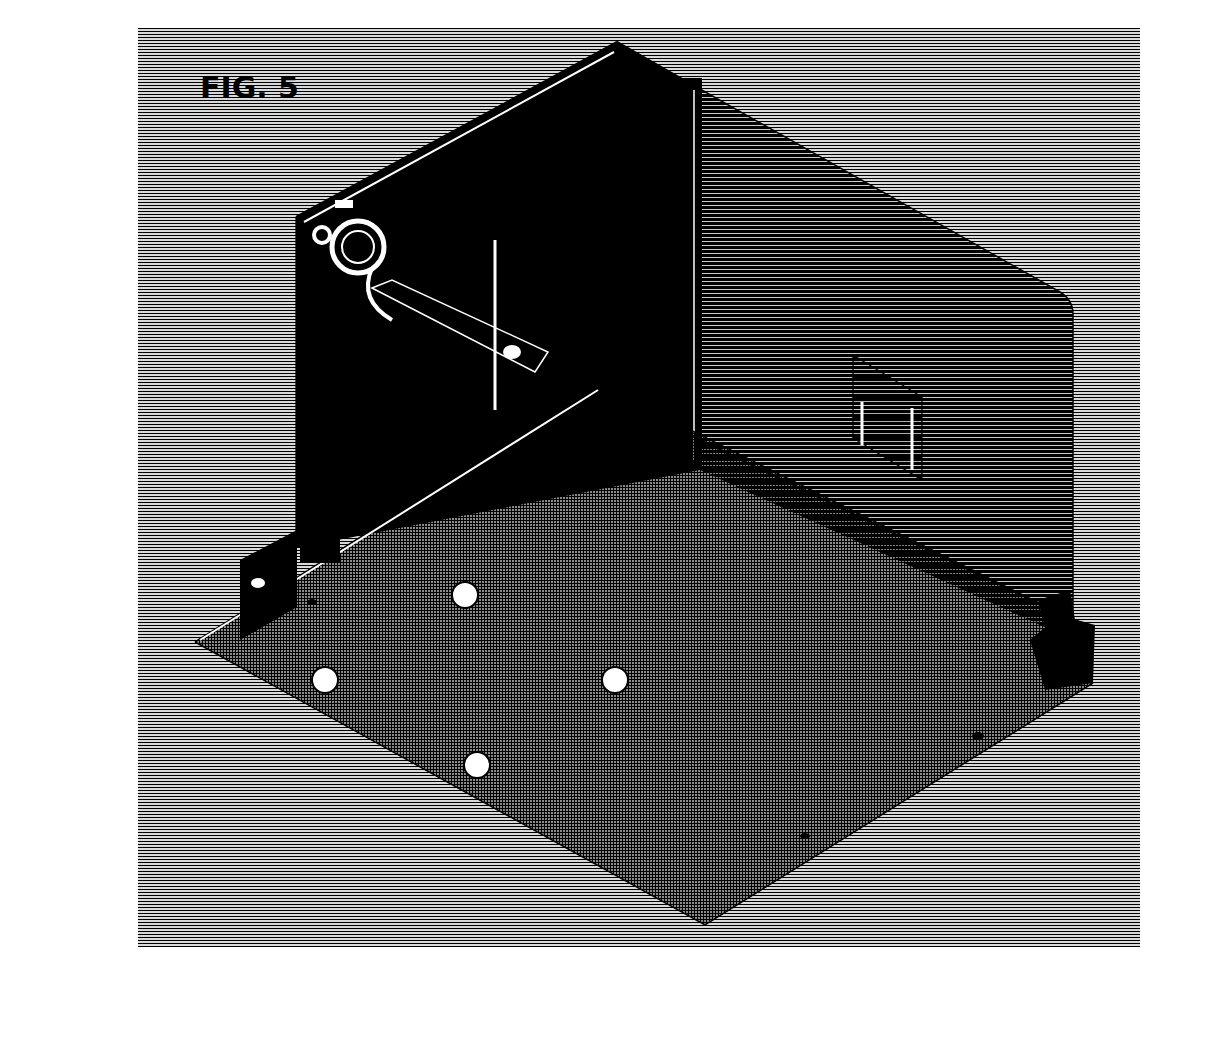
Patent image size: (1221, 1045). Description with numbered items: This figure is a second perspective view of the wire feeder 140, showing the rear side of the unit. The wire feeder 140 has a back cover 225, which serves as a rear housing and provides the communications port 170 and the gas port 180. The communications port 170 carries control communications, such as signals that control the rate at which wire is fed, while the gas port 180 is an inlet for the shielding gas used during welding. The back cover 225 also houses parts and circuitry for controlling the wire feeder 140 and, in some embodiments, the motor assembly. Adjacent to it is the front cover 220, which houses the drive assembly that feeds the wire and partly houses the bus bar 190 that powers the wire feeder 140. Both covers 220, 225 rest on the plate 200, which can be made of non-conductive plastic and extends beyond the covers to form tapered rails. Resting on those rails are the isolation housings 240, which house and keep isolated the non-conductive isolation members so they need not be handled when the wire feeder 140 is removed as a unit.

The wire feeder 140 is at (824, 80).
The back cover 225 is at (470, 112).
The front cover 220 is at (945, 172).
The communications port 170 is at (296, 228).
The bus bar 190 is at (296, 318).
The gas port 180 is at (296, 388).
The plate 200 is at (985, 842).
The isolation housings 240 is at (250, 497).